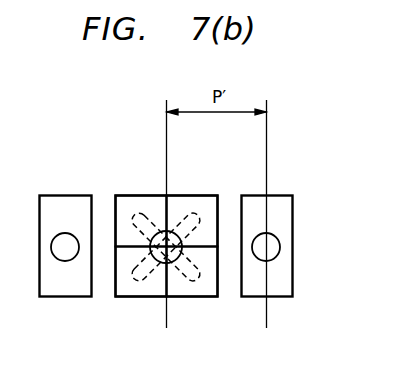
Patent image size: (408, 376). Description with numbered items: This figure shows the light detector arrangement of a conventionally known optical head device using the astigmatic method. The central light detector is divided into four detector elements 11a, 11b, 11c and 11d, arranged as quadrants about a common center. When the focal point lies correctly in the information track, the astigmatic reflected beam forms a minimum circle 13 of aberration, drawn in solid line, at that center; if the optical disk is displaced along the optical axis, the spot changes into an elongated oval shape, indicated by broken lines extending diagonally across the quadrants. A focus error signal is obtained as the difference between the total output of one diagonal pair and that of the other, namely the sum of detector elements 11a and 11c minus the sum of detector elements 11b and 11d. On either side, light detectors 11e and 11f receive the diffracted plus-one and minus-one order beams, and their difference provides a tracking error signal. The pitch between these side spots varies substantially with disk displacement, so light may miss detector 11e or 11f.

The detector element 11a is at (202, 197).
The detector element 11b is at (133, 197).
The detector element 11c is at (128, 295).
The detector element 11d is at (200, 295).
The light detector 11e is at (60, 297).
The light detector 11f is at (288, 297).
The minimum circle of aberration 13 is at (163, 263).